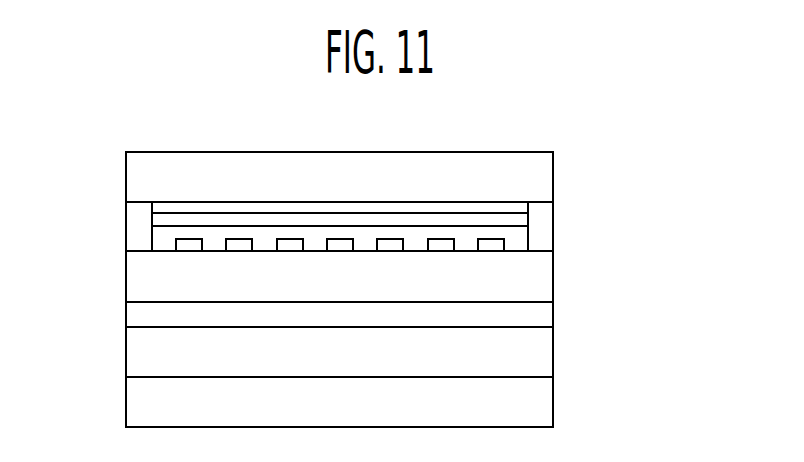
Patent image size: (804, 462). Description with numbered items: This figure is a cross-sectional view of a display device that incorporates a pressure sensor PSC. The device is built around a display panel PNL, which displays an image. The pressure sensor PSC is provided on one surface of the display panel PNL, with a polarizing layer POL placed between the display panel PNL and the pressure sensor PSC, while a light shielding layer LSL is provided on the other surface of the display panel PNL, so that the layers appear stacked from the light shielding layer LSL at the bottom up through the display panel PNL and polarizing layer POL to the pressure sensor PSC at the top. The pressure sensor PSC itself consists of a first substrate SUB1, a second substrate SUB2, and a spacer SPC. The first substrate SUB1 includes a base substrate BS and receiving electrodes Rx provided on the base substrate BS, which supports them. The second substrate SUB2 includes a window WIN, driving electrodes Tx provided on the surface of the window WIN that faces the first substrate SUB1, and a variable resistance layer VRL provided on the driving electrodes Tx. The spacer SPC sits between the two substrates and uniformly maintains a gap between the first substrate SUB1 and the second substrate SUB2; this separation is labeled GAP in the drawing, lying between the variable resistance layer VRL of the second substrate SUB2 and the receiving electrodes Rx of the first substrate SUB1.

The window WIN is at (538, 190).
The driving electrodes Tx is at (518, 208).
The variable resistance layer VRL is at (520, 220).
The spacer SPC is at (543, 233).
The gap GAP is at (170, 237).
The receiving electrodes Rx is at (497, 246).
The base substrate BS is at (540, 289).
The polarizing layer POL is at (540, 316).
The display panel PNL is at (543, 365).
The light shielding layer LSL is at (543, 409).
The second substrate SUB2 is at (631, 148).
The first substrate SUB1 is at (631, 265).
The pressure sensor PSC is at (702, 173).